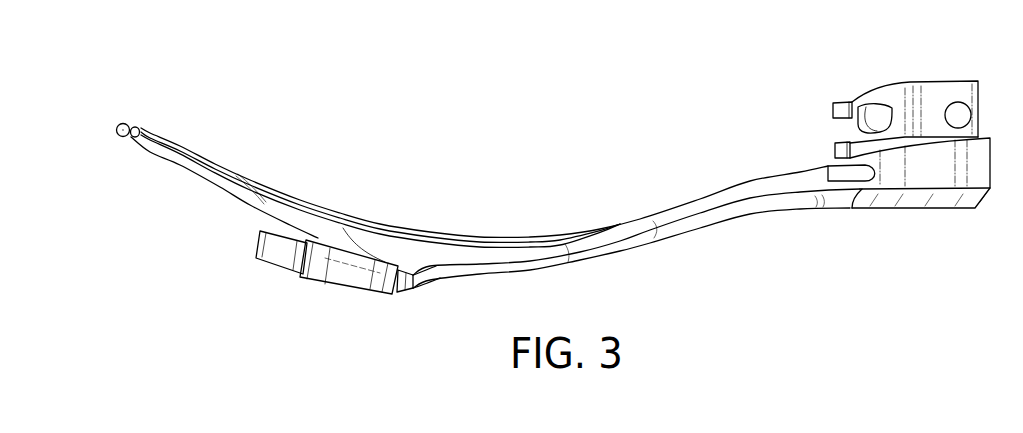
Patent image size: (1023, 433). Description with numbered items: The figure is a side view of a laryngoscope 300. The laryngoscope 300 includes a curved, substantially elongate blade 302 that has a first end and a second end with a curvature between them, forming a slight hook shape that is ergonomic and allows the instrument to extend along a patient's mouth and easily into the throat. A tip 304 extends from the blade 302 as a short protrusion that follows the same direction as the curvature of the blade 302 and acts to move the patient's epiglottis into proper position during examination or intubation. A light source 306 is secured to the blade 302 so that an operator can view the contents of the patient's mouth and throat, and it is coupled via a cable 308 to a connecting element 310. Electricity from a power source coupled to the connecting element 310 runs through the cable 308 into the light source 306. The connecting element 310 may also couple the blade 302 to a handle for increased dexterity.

The laryngoscope 300 is at (377, 97).
The blade 302 is at (223, 168).
The tip 304 is at (119, 152).
The light source 306 is at (352, 284).
The cable 308 is at (445, 279).
The connecting element 310 is at (841, 83).